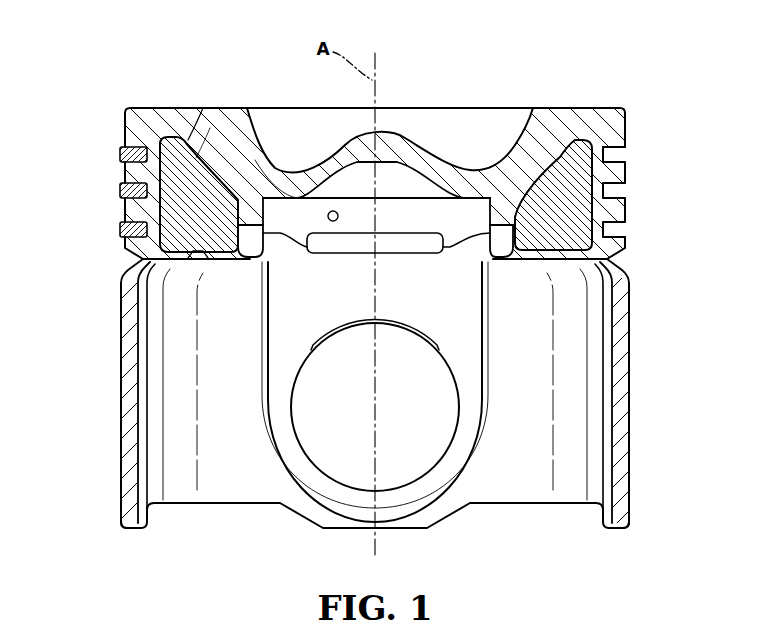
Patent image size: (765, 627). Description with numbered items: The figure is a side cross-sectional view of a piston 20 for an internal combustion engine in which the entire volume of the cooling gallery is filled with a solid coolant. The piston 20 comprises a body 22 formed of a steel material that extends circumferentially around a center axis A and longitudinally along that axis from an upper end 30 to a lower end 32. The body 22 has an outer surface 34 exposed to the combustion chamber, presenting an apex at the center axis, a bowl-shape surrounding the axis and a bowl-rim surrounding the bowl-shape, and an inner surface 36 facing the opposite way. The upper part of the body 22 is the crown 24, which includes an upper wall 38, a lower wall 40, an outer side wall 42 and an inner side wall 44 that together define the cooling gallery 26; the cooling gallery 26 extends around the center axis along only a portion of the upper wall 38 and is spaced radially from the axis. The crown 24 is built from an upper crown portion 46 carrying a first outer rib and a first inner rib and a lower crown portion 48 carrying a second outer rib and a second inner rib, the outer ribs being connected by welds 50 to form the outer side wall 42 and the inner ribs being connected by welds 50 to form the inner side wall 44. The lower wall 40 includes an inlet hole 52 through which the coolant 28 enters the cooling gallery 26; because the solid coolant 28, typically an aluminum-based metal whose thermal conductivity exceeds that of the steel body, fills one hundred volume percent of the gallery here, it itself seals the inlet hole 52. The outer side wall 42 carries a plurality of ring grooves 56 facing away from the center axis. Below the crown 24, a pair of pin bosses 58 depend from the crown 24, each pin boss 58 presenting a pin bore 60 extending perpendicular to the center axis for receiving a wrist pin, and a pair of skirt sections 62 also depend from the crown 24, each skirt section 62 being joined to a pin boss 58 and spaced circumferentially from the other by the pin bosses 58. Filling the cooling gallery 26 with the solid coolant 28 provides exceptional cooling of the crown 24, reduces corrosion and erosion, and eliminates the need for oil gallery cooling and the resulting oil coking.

The piston 20 is at (557, 81).
The body 22 is at (117, 417).
The crown 24 is at (630, 106).
The cooling gallery 26 is at (168, 108).
The coolant 28 is at (550, 203).
The upper end 30 is at (590, 107).
The lower end 32 is at (627, 530).
The outer surface 34 is at (323, 147).
The inner surface 36 is at (428, 188).
The upper wall 38 is at (203, 107).
The lower wall 40 is at (140, 260).
The outer side wall 42 is at (607, 250).
The inner side wall 44 is at (497, 205).
The upper crown portion 46 is at (281, 161).
The lower crown portion 48 is at (270, 255).
The welds 50 is at (246, 188).
The inlet hole 52 is at (205, 262).
The ring grooves 56 is at (620, 235).
The pin boss 58 is at (518, 473).
The pin bore 60 is at (428, 473).
The skirt section 62 is at (620, 443).